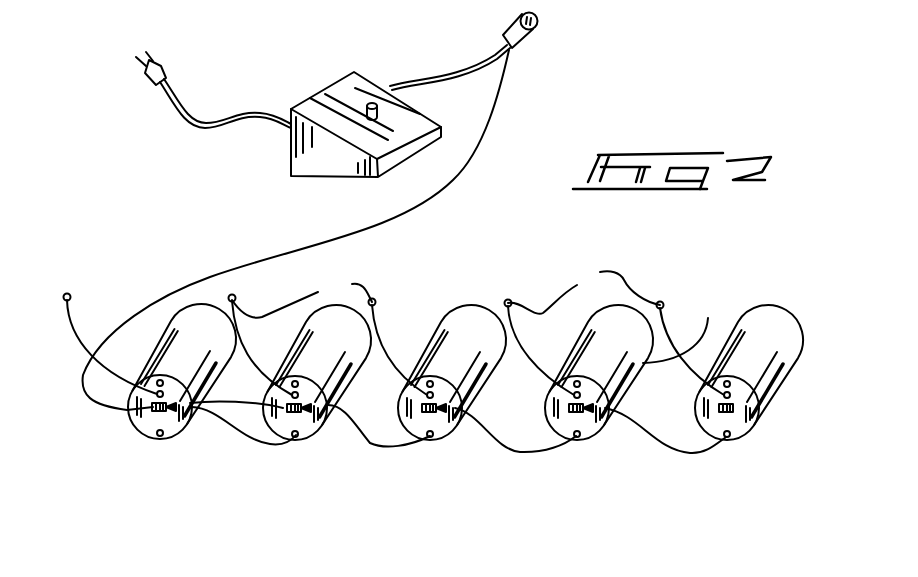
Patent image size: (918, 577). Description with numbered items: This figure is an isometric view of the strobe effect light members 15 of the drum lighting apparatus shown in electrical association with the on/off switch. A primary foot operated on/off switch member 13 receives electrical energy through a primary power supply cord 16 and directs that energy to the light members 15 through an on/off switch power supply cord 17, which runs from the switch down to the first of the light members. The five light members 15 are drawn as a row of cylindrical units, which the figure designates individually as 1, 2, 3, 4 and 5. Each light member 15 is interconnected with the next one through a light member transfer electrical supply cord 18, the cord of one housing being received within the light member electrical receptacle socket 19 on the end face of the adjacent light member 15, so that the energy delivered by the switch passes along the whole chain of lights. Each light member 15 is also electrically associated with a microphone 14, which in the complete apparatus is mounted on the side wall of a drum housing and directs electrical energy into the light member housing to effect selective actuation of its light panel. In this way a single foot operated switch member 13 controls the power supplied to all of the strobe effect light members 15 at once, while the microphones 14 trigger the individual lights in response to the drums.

The first battery cell 1 is at (150, 355).
The second battery cell 2 is at (300, 356).
The third battery cell 3 is at (438, 355).
The fourth battery cell 4 is at (579, 355).
The fifth battery cell 5 is at (730, 355).
The primary foot operated on/off switch member 13 is at (388, 87).
The microphone 14 is at (67, 297).
The strobe effect light member 15 is at (684, 326).
The primary power supply cord 16 is at (250, 116).
The on/off switch power supply cord 17 is at (507, 103).
The light member transfer electrical supply cord 18 is at (367, 441).
The light member electrical receptacle socket 19 is at (178, 402).